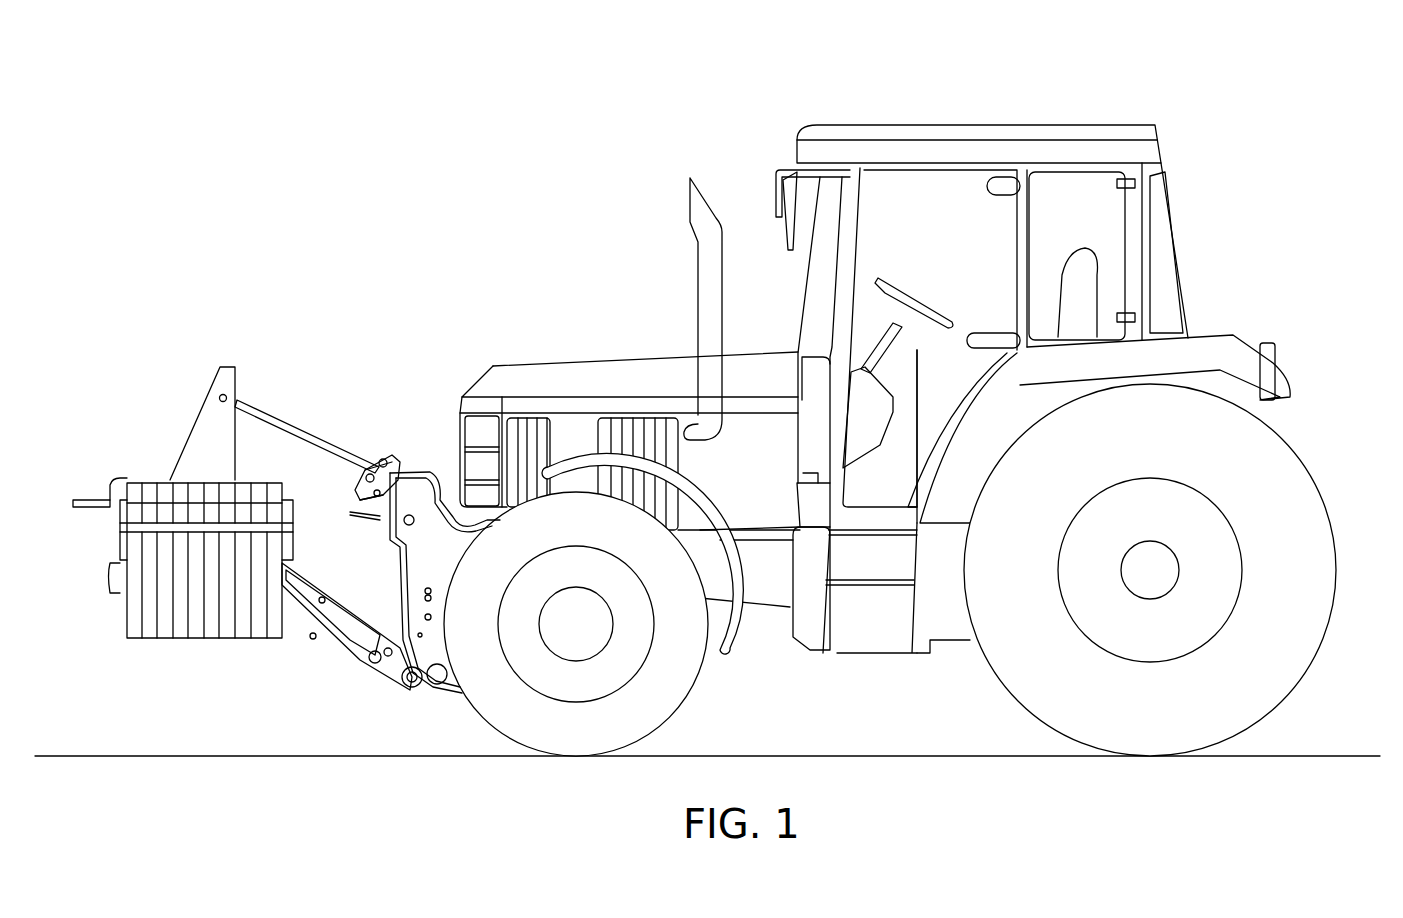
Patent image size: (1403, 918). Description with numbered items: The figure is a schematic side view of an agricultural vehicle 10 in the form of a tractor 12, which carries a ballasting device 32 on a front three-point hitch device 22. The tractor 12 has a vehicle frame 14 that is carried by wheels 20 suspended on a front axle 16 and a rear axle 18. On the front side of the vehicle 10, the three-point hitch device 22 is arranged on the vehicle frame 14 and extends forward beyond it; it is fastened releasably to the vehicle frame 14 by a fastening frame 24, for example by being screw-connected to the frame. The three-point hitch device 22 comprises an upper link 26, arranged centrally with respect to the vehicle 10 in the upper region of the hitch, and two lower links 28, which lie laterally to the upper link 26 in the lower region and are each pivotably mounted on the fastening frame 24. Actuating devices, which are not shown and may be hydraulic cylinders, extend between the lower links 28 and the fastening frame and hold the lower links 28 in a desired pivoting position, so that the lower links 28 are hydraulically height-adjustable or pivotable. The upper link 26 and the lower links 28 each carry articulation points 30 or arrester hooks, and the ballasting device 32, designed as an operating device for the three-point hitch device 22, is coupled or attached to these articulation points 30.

The agricultural vehicle 10 is at (536, 116).
The tractor 12 is at (965, 132).
The vehicle frame 14 is at (757, 572).
The front axle 16 is at (573, 630).
The rear axle 18 is at (1162, 565).
The wheels 20 is at (650, 712).
The three-point hitch device 22 is at (393, 455).
The fastening frame 24 is at (418, 493).
The upper link 26 is at (283, 428).
The lower links 28 is at (316, 604).
The articulation points 30 is at (238, 385).
The ballasting device 32 is at (345, 296).